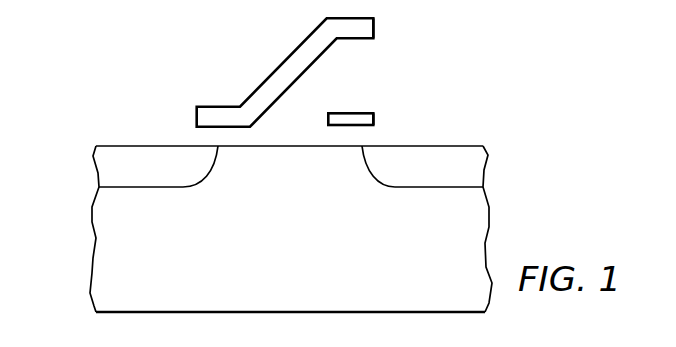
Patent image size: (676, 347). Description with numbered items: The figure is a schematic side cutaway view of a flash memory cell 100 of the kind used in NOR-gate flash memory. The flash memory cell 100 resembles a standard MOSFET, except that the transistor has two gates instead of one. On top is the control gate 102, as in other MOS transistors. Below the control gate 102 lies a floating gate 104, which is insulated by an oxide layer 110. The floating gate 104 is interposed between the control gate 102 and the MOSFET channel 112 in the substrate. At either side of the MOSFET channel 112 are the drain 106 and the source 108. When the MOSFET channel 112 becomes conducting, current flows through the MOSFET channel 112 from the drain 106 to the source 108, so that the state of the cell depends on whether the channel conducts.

The flash memory cell 100 is at (141, 64).
The control gate 102 is at (285, 60).
The floating gate 104 is at (348, 113).
The drain 106 is at (485, 163).
The source 108 is at (95, 165).
The oxide layer 110 is at (372, 53).
The MOSFET channel 112 is at (320, 158).